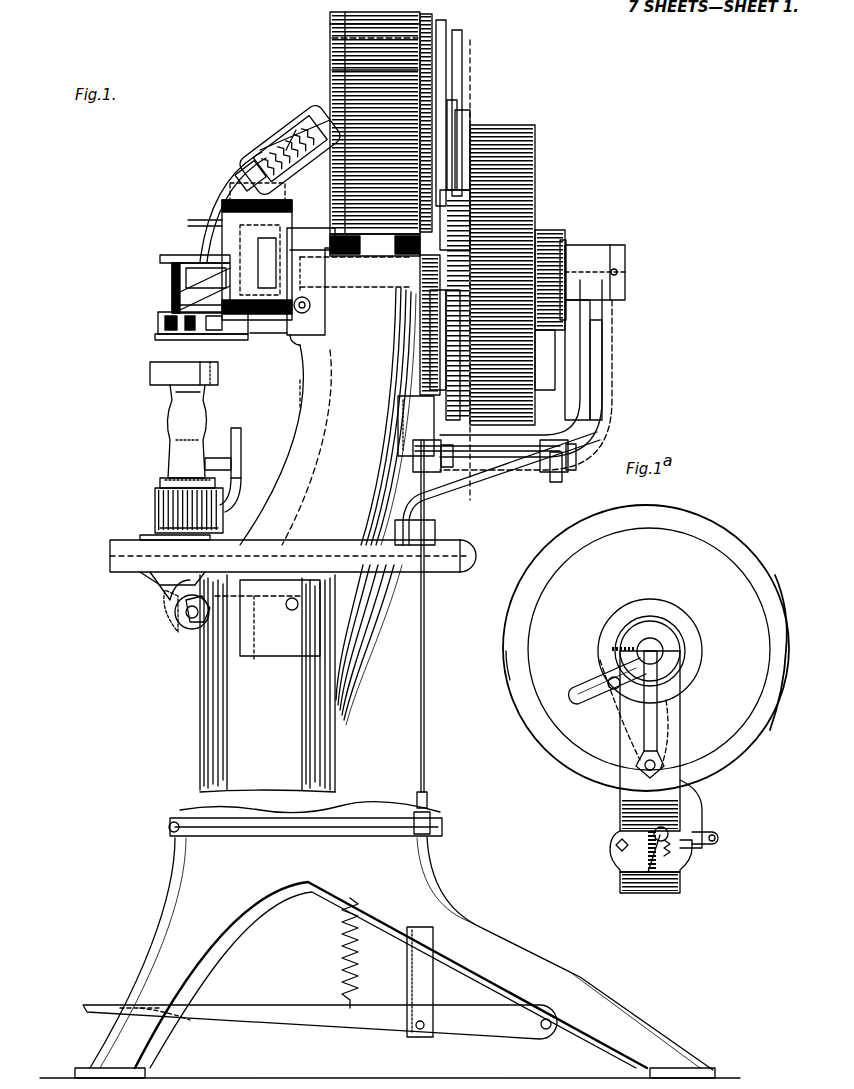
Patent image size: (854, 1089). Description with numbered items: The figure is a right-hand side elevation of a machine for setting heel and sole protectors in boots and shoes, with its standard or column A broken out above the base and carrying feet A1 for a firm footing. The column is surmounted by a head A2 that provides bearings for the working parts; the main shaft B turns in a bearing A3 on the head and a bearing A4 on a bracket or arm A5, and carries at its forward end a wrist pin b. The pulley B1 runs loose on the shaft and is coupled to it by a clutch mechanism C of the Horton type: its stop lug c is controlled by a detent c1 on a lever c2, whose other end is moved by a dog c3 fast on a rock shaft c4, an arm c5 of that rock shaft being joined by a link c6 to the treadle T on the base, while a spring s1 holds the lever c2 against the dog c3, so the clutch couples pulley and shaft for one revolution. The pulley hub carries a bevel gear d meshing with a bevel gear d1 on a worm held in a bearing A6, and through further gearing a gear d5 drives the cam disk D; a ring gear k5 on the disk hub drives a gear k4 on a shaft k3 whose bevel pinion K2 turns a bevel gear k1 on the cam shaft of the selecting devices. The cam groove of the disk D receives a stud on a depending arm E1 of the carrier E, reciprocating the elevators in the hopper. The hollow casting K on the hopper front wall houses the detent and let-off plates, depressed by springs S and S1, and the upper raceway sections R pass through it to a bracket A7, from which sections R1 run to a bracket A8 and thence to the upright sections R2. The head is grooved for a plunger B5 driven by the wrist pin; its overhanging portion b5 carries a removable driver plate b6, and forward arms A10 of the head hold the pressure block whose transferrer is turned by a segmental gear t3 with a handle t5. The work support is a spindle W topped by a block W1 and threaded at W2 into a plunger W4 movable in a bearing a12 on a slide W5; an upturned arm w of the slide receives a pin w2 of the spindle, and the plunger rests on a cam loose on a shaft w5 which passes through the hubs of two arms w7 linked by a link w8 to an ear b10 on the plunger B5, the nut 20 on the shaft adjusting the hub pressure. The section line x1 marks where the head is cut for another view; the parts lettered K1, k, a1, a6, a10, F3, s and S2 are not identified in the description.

In FIG. 1, the hollow casting K is at (300, 104).
In FIG. 1, the drum top K1 is at (330, 24).
In FIG. 1, the bevel pinion K2 is at (330, 38).
In FIG. 1, the drum ring k is at (348, 60).
In FIG. 1, the bevel gear k1 is at (440, 22).
In FIG. 1, the shaft k3 is at (375, 59).
In FIG. 1, the gear k4 is at (375, 259).
In FIG. 1, the ring gear k5 is at (390, 302).
In FIG. 1, the section line x1 is at (469, 279).
In FIG. 1, the carrier E is at (452, 94).
In FIG. 1, the depending arm E1 is at (458, 175).
In FIG. 1, the cam disk D is at (455, 208).
In FIG. 1, the pulley B1 is at (500, 230).
In FIG. 1A, the pulley B1 is at (504, 646).
In FIG. 1, the collar a1 is at (555, 269).
In FIG. 1, the clutch mechanism C is at (548, 240).
In FIG. 1A, the clutch mechanism C is at (686, 622).
In FIG. 1, the stop lug c is at (572, 250).
In FIG. 1A, the stop lug c is at (616, 652).
In FIG. 1, the detent c1 is at (606, 320).
In FIG. 1A, the detent c1 is at (608, 672).
In FIG. 1, the lever c2 is at (562, 365).
In FIG. 1A, the lever c2 is at (640, 740).
In FIG. 1, the dog c3 is at (560, 455).
In FIG. 1A, the dog c3 is at (688, 830).
In FIG. 1, the rock shaft c4 is at (555, 475).
In FIG. 1A, the rock shaft c4 is at (658, 884).
In FIG. 1, the arm c5 is at (415, 465).
In FIG. 1A, the arm c5 is at (702, 836).
In FIG. 1, the link c6 is at (426, 728).
In FIG. 1, the bearing A4 is at (603, 244).
In FIG. 1, the bracket A5 is at (612, 412).
In FIG. 1, the spring s1 is at (572, 470).
In FIG. 1A, the spring s1 is at (672, 855).
In FIG. 1, the gear d5 is at (420, 366).
In FIG. 1, the bevel gear d is at (368, 395).
In FIG. 1, the bevel gear d1 is at (432, 325).
In FIG. 1, the head A2 is at (314, 447).
In FIG. 1, the main shaft B is at (362, 300).
In FIG. 1, the ear b10 is at (316, 299).
In FIG. 1, the plate a6 is at (400, 326).
In FIG. 1, the bearing A6 is at (398, 350).
In FIG. 1, the springs S1 is at (290, 180).
In FIG. 1, the switch block S2 is at (262, 160).
In FIG. 1, the switch spring s is at (297, 136).
In FIG. 1, the bracket A7 is at (240, 172).
In FIG. 1, the plunger B5 is at (230, 188).
In FIG. 1, the raceway sections R1 is at (198, 218).
In FIG. 1, the upper raceway sections R is at (200, 240).
In FIG. 1, the bracket A8 is at (175, 260).
In FIG. 1, the driver plate b6 is at (185, 280).
In FIG. 1, the overhanging portion b5 is at (226, 260).
In FIG. 1, the wrist pin b is at (257, 311).
In FIG. 1, the upright raceway sections R2 is at (172, 306).
In FIG. 1, the segmental gear t3 is at (162, 320).
In FIG. 1, the actuating handle t5 is at (170, 330).
In FIG. 1, the plate F3 is at (225, 325).
In FIG. 1, the arms A10 is at (215, 330).
In FIG. 1, the block W1 is at (152, 374).
In FIG. 1, the spindle W is at (172, 417).
In FIG. 1, the stud w2 is at (225, 435).
In FIG. 1, the upturned arm w is at (242, 436).
In FIG. 1, the link w8 is at (310, 395).
In FIG. 1, the threaded end W2 is at (168, 478).
In FIG. 1, the threaded plunger W4 is at (158, 508).
In FIG. 1, the bearing a12 is at (155, 520).
In FIG. 1, the slide W5 is at (135, 545).
In FIG. 1, the bracket a10 is at (150, 576).
In FIG. 1, the shaft w5 is at (186, 614).
In FIG. 1, the nut 20 is at (194, 624).
In FIG. 1, the arms w7 is at (254, 656).
In FIG. 1, the standard A is at (206, 706).
In FIG. 1, the feet A1 is at (160, 976).
In FIG. 1, the treadle T is at (274, 1006).
In FIG. 1, the springs S is at (345, 928).
In FIG. 1, the bearing A3 is at (295, 181).